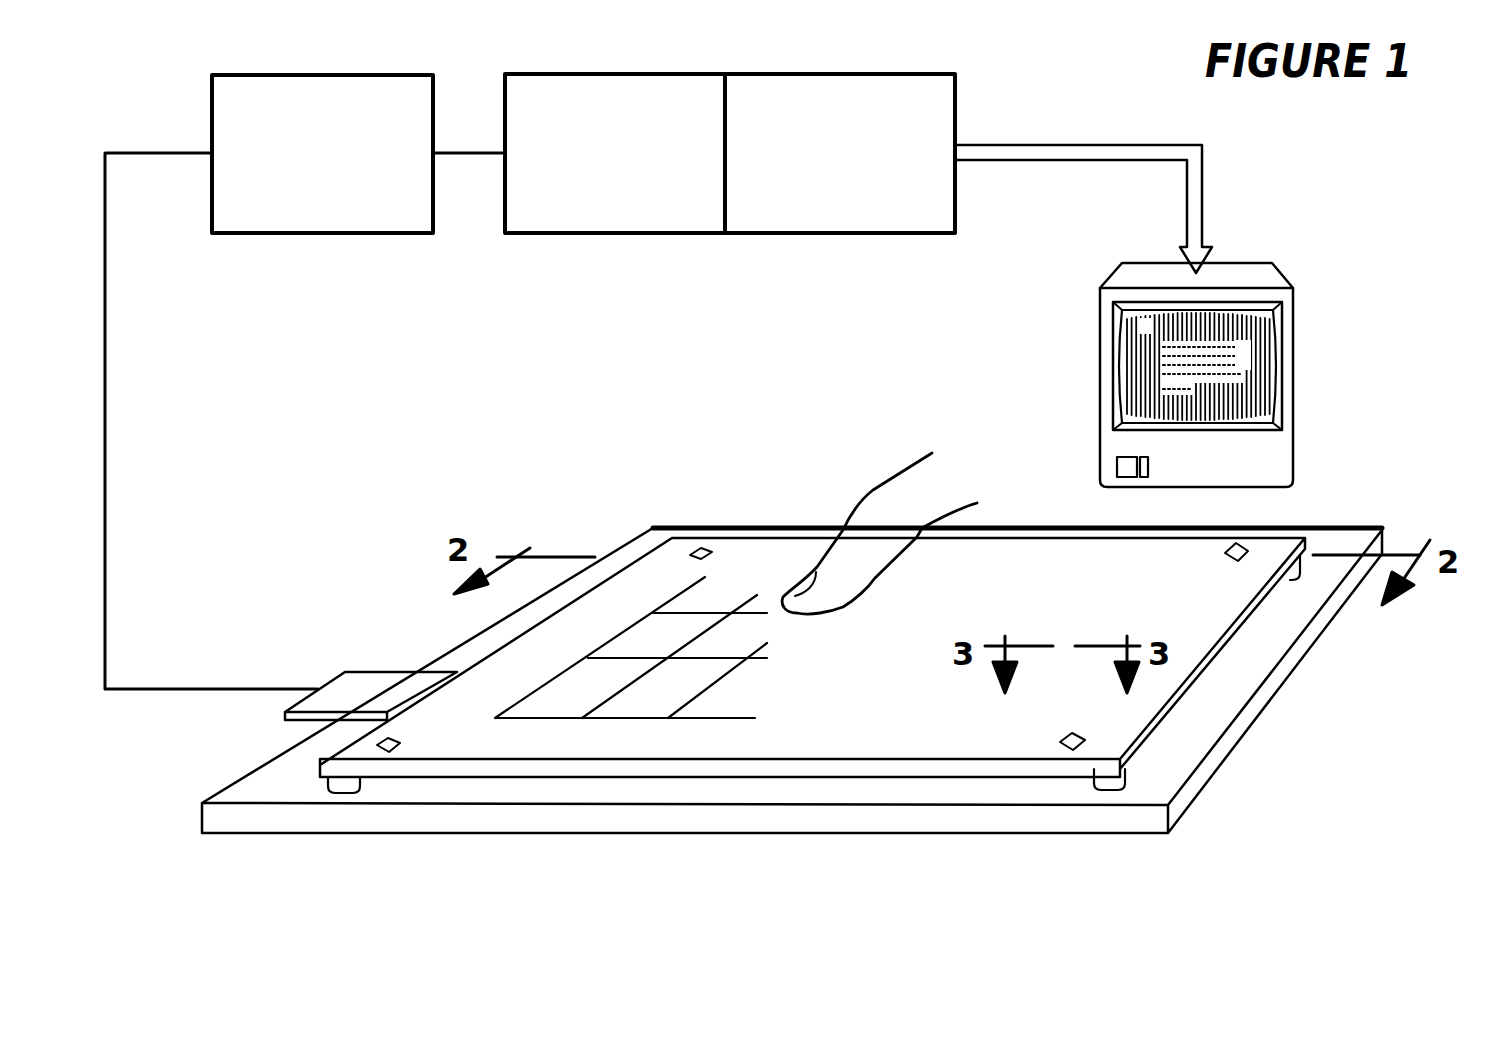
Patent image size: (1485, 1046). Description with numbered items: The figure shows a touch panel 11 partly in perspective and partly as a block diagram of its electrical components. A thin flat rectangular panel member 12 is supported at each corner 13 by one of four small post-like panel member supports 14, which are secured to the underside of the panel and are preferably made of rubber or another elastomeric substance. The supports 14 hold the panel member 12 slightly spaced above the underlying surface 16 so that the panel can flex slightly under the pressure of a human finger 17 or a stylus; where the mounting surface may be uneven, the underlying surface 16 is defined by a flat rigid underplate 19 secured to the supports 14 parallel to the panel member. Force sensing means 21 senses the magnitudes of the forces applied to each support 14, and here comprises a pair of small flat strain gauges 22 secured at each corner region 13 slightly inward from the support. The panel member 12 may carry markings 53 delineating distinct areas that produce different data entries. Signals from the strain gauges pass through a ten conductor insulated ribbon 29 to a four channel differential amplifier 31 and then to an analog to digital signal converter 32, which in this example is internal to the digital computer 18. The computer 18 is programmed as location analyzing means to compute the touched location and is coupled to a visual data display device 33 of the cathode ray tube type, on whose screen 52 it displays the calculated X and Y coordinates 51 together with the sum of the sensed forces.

The touch panel 11 is at (230, 727).
The panel member 12 is at (960, 623).
The corner 13 is at (703, 530).
The panel member supports 14 is at (342, 785).
The underlying surface 16 is at (1223, 695).
The human finger 17 is at (873, 488).
The digital computer 18 is at (843, 233).
The underplate 19 is at (1233, 735).
The force sensing means 21 is at (718, 556).
The strain gauges 22 is at (697, 549).
The ten conductor insulated ribbon 29 is at (372, 672).
The four channel differential amplifier 31 is at (308, 233).
The analog to digital signal converter 32 is at (615, 233).
The visual data display device 33 is at (1297, 410).
The X and Y coordinates 51 is at (1257, 350).
The screen 52 is at (1130, 398).
The markings 53 is at (727, 677).